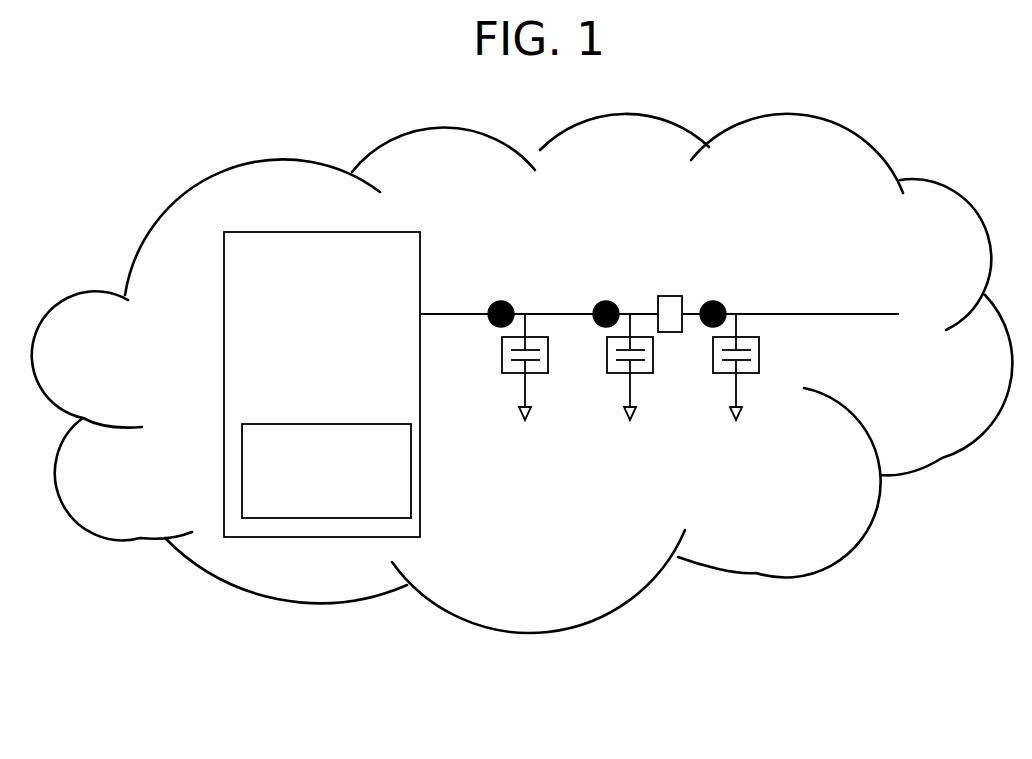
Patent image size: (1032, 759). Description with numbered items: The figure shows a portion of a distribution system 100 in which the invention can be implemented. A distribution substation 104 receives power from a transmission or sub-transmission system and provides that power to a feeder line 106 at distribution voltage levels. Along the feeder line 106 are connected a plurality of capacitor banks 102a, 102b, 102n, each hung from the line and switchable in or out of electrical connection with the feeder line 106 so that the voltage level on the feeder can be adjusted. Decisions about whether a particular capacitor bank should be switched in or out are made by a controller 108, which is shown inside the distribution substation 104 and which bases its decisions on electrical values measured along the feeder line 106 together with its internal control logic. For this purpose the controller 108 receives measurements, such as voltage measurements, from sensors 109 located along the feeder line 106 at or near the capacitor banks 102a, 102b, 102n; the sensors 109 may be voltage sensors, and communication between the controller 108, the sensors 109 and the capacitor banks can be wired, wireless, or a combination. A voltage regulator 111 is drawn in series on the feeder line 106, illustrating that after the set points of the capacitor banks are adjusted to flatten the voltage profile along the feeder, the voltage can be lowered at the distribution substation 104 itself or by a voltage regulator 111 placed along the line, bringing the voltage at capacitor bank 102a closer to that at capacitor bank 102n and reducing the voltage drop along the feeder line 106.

The distribution system 100 is at (319, 601).
The capacitor bank 102a is at (502, 348).
The capacitor bank 102b is at (607, 350).
The capacitor bank 102n is at (713, 347).
The distribution substation 104 is at (300, 367).
The feeder line 106 is at (820, 315).
The controller 108 is at (348, 502).
The sensor 109 is at (503, 302).
The voltage regulator 111 is at (678, 296).